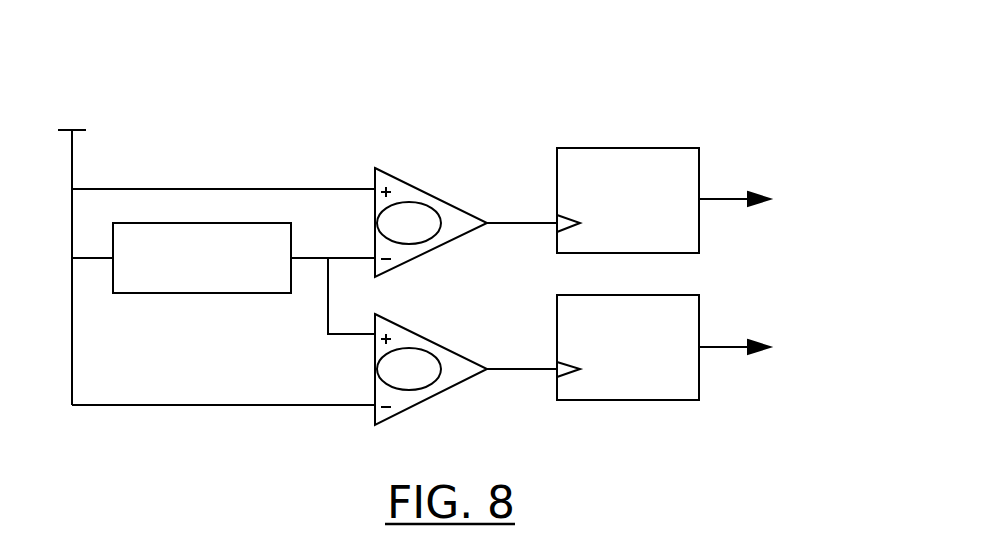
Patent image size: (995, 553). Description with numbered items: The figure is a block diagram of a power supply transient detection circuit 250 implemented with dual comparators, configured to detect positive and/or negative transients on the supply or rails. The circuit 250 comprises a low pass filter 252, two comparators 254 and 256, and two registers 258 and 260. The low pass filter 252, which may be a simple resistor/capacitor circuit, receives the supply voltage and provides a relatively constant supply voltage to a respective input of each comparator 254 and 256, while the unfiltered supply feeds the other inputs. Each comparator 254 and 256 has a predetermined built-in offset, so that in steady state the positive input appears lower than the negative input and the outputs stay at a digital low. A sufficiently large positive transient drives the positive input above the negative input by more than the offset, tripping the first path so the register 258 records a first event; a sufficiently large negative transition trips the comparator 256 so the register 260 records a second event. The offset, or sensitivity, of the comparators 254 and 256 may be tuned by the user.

The dual-comparator circuit 250 is at (106, 35).
The low pass filter 252 is at (239, 222).
The comparator 254 is at (408, 179).
The comparator 256 is at (408, 325).
The register 258 is at (665, 147).
The register 260 is at (665, 294).